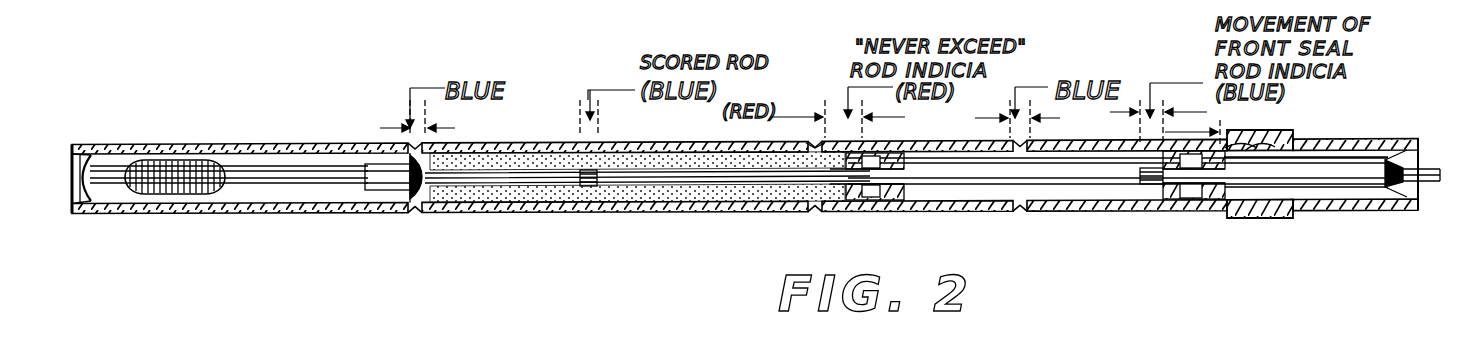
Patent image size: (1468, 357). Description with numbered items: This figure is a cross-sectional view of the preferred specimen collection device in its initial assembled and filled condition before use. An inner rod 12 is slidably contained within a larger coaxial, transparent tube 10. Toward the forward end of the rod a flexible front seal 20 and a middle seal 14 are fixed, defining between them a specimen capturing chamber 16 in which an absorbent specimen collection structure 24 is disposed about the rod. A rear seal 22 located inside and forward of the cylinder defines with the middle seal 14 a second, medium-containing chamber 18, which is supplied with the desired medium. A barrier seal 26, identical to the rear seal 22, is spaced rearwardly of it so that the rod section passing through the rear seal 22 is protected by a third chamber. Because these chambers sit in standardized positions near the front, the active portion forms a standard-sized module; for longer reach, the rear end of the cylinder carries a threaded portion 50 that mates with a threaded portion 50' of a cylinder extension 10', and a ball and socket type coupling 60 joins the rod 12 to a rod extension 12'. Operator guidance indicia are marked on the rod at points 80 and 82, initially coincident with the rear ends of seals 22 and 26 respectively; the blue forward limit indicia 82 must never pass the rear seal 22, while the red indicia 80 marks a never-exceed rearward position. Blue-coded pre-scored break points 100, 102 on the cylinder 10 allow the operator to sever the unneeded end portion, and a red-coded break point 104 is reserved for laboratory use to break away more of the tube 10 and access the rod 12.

The tube 10 is at (745, 203).
The cylinder extension 10' is at (1285, 198).
The inner rod 12 is at (364, 144).
The rod extension 12' is at (1334, 209).
The middle seal 14 is at (438, 150).
The specimen capturing chamber 16 is at (254, 166).
The medium-containing chamber 18 is at (606, 198).
The front seal 20 is at (88, 152).
The rear seal 22 is at (882, 210).
The absorbent specimen collection structure 24 is at (160, 162).
The barrier seal 26 is at (1228, 150).
The threaded portion 50 is at (1268, 125).
The threaded portion of cylinder extension 50' is at (1299, 129).
The ball and socket type coupling 60 is at (1428, 130).
The rearward rod movement limit indicia 80 is at (814, 146).
The forward movement limit indicia 82 is at (1152, 212).
The pre-scored break point 100 is at (415, 222).
The pre-scored break point 102 is at (1020, 214).
The break point 104 is at (815, 215).